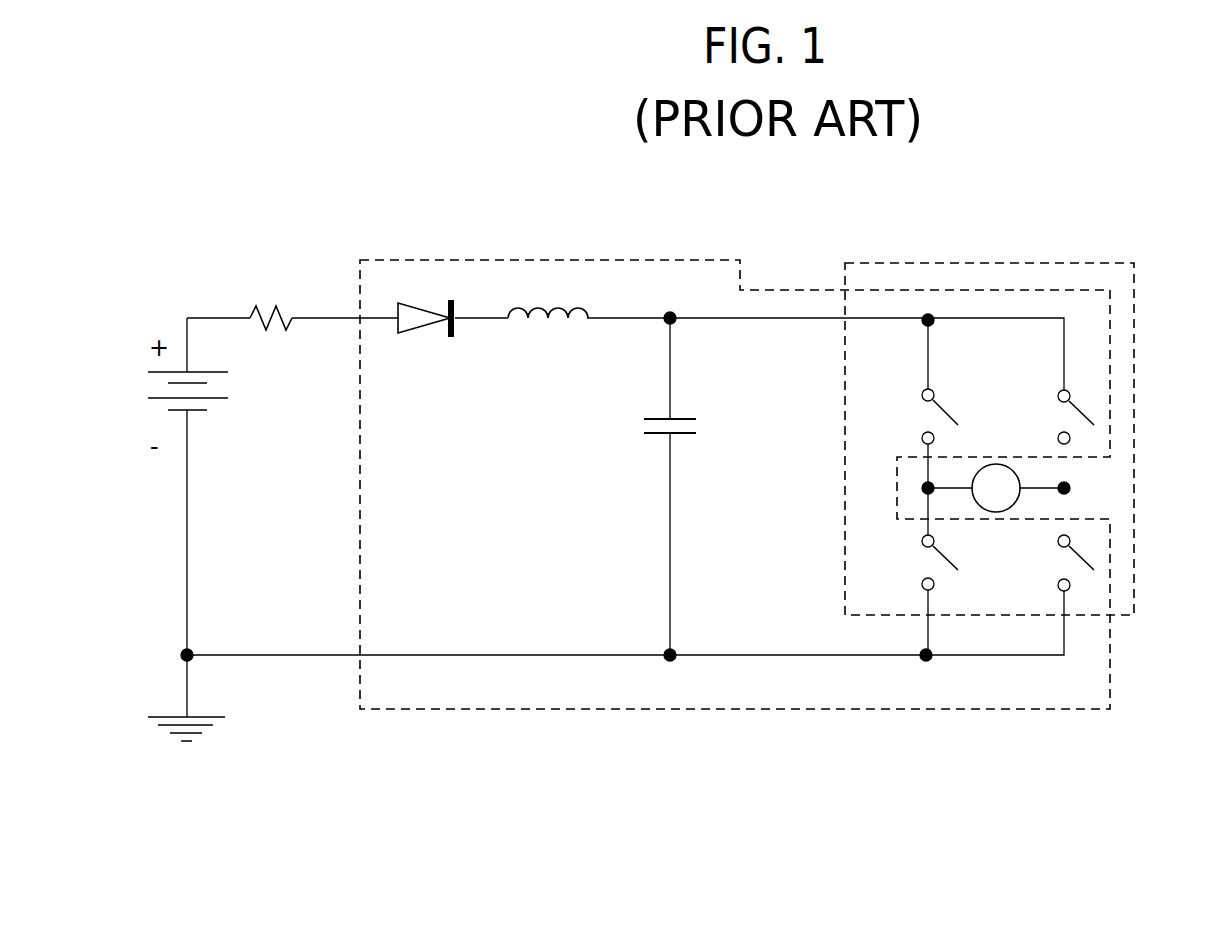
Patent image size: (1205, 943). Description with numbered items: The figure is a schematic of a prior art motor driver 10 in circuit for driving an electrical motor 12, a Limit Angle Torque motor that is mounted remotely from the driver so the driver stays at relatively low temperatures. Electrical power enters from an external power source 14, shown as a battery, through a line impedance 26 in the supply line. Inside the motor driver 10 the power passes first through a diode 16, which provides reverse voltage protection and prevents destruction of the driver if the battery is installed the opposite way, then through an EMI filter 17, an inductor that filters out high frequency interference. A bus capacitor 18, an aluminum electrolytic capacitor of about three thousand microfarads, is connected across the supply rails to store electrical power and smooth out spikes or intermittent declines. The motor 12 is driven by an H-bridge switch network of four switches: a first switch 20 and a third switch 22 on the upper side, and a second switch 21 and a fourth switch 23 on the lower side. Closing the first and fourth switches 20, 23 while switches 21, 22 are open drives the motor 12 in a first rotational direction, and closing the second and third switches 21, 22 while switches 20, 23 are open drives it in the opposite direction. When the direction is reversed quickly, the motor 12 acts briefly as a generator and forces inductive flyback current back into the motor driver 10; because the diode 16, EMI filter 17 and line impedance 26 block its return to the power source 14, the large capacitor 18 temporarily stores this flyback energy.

The motor driver 10 is at (466, 258).
The electrical motor 12 is at (1013, 471).
The external power source 14 is at (224, 387).
The diode 16 is at (418, 313).
The EMI filter 17 is at (537, 318).
The bus capacitor 18 is at (642, 420).
The first switch 20 is at (950, 416).
The second switch 21 is at (957, 564).
The third switch 22 is at (1088, 417).
The fourth switch 23 is at (1085, 562).
The line impedance 26 is at (263, 300).